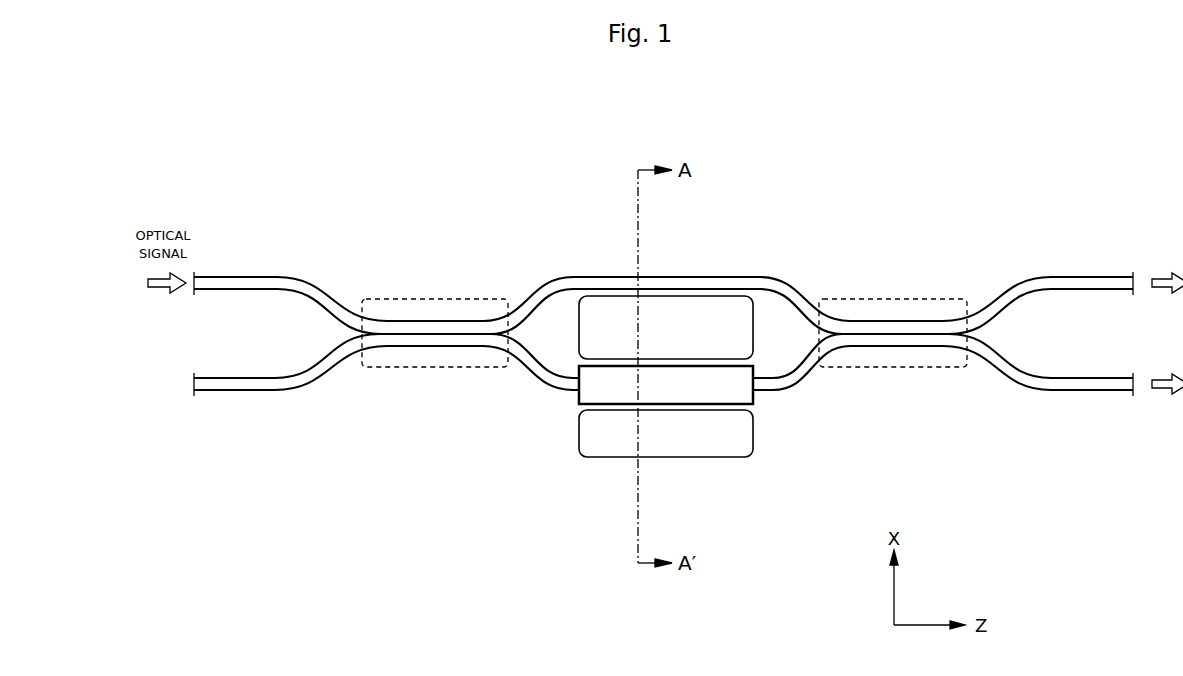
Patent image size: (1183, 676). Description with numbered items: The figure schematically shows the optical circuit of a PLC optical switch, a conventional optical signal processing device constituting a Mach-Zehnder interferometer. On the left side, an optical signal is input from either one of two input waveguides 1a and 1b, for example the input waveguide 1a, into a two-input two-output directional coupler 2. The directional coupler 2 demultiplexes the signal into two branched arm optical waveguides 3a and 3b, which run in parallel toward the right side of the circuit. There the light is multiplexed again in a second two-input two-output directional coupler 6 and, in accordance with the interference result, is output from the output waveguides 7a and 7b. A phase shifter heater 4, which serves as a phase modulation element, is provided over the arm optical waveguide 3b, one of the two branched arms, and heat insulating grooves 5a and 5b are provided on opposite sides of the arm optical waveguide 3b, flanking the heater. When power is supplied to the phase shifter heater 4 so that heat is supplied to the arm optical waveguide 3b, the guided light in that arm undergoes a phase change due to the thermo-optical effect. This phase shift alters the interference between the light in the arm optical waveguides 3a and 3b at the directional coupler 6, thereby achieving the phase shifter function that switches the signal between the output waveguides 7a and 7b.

The input waveguide 1a is at (253, 276).
The input waveguide 1b is at (260, 392).
The directional coupler 2 is at (427, 298).
The arm optical waveguide 3a is at (673, 277).
The arm optical waveguide 3b is at (799, 379).
The phase shifter heater 4 is at (581, 392).
The heat insulating groove 5a is at (666, 327).
The heat insulating groove 5b is at (666, 433).
The directional coupler 6 is at (885, 298).
The output waveguide 7a is at (1066, 277).
The output waveguide 7b is at (1068, 392).